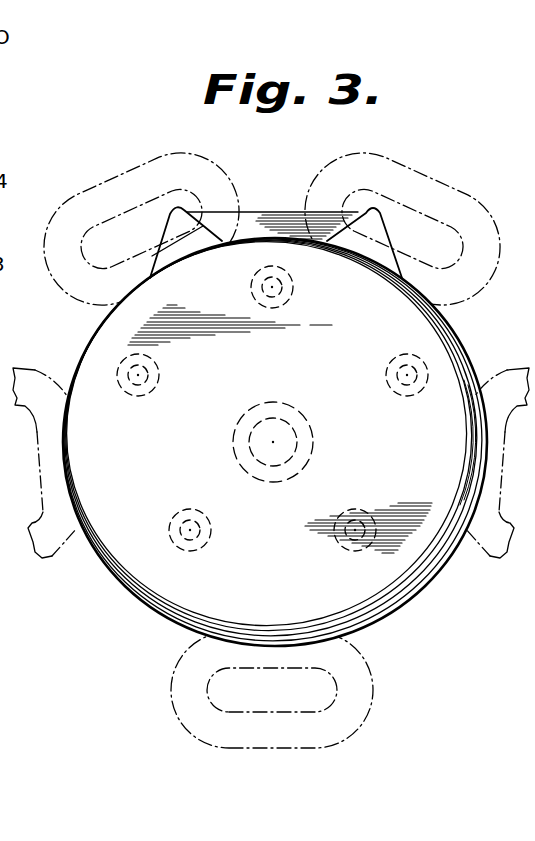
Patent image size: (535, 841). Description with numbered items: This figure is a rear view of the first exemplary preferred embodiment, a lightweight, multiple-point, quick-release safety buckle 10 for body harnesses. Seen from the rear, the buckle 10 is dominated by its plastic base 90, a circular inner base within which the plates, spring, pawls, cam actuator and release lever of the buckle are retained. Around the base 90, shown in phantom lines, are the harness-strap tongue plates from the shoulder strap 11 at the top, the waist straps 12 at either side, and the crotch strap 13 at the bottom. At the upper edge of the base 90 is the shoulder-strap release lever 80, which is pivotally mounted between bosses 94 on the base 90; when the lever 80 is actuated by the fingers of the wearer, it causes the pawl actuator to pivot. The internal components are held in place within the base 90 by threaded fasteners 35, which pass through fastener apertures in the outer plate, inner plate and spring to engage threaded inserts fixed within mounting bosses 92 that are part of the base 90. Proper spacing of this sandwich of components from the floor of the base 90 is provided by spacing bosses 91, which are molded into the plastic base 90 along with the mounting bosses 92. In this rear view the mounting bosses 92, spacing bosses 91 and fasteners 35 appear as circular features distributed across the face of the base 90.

The safety buckle 10 is at (422, 140).
The shoulder strap 11 is at (172, 150).
The waist straps 12 is at (50, 548).
The crotch strap 13 is at (362, 700).
The threaded fasteners 35 is at (152, 375).
The shoulder-strap release lever 80 is at (263, 208).
The base 90 is at (177, 600).
The spacing bosses 91 is at (278, 475).
The mounting bosses 92 is at (285, 303).
The bosses 94 is at (157, 220).